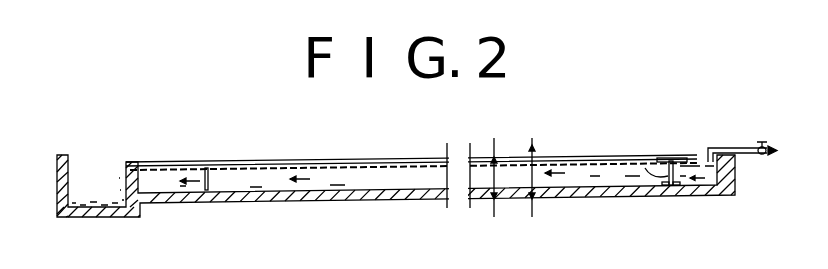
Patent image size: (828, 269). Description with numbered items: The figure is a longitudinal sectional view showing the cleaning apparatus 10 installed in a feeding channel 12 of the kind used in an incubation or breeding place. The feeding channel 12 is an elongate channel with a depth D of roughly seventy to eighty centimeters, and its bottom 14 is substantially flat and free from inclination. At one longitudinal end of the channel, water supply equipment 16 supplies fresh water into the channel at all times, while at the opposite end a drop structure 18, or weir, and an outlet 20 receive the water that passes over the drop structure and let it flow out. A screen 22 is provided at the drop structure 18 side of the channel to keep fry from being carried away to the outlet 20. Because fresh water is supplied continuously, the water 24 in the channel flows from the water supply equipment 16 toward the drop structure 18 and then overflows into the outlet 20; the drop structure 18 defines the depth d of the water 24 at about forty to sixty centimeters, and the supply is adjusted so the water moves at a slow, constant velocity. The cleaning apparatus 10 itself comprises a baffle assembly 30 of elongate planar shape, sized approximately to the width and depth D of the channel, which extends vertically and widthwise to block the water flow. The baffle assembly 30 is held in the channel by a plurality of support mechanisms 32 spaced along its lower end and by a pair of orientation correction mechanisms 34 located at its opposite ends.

The cleaning apparatus 10 is at (411, 168).
The feeding channel 12 is at (576, 155).
The bottom 14 is at (396, 184).
The water supply equipment 16 is at (735, 150).
The drop structure 18 is at (131, 162).
The outlet 20 is at (63, 155).
The screen 22 is at (157, 167).
The water 24 is at (588, 180).
The baffle assembly 30 is at (645, 170).
The support mechanisms 32 is at (690, 187).
The orientation correction mechanisms 34 is at (664, 158).
The depth of the water d is at (496, 176).
The depth of the channel D is at (533, 178).